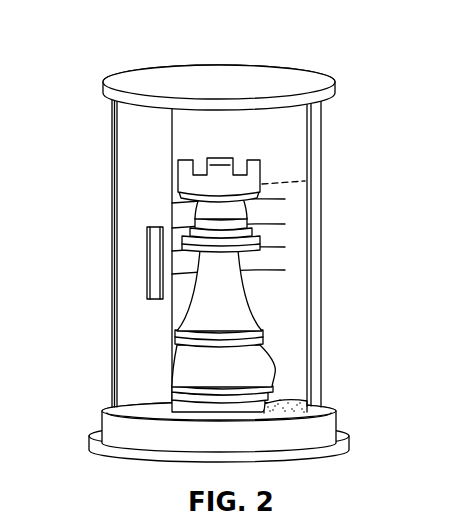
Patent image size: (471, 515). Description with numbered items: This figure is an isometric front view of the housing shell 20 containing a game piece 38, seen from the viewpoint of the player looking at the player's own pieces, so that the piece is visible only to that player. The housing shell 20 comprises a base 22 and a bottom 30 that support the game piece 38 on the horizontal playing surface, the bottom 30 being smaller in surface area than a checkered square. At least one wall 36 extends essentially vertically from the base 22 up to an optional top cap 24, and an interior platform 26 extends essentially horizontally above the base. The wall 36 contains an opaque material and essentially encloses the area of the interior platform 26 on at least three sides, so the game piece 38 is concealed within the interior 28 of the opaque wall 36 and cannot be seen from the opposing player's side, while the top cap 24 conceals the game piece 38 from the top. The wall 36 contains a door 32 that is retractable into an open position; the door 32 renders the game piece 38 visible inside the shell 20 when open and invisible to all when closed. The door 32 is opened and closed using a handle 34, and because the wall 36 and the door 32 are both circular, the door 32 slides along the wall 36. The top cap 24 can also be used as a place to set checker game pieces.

The housing shell 20 is at (86, 165).
The base 22 is at (323, 422).
The top cap 24 is at (217, 77).
The interior platform 26 is at (289, 400).
The interior 28 is at (283, 230).
The bottom 30 is at (342, 441).
The door 32 is at (133, 358).
The handle 34 is at (157, 280).
The wall 36 is at (317, 163).
The game piece 38 is at (230, 312).